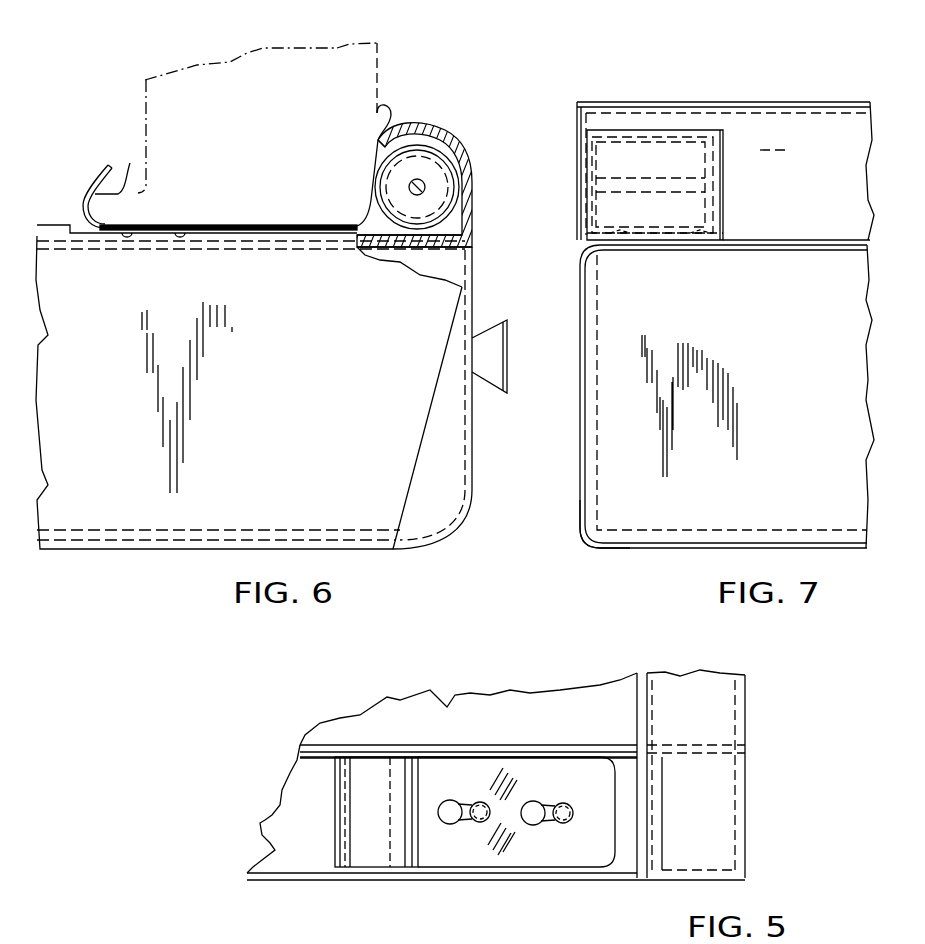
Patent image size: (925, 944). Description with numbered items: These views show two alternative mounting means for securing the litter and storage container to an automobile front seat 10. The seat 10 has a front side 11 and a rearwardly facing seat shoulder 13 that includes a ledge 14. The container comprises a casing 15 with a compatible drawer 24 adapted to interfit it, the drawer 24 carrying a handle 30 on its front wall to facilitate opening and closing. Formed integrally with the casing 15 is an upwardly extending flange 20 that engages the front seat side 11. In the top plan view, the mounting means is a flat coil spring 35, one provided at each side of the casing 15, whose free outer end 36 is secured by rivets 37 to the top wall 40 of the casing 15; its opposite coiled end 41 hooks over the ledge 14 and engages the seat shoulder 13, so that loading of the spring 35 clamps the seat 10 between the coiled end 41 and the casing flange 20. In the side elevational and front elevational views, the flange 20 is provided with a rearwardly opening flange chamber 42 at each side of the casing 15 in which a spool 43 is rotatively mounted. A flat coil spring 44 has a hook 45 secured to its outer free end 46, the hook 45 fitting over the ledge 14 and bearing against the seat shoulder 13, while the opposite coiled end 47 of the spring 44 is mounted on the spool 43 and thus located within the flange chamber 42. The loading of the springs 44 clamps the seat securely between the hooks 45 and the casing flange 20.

In FIG. 5, the automobile front seat 10 is at (476, 908).
In FIG. 6, the front side 11 is at (380, 44).
In FIG. 6, the seat shoulder 13 is at (145, 96).
In FIG. 6, the ledge 14 is at (130, 163).
In FIG. 6, the casing 15 is at (420, 462).
In FIG. 7, the casing 15 is at (578, 327).
In FIG. 5, the casing 15 is at (678, 879).
In FIG. 6, the flange 20 is at (388, 108).
In FIG. 7, the flange 20 is at (740, 101).
In FIG. 5, the flange 20 is at (637, 701).
In FIG. 6, the drawer 24 is at (478, 430).
In FIG. 7, the drawer 24 is at (583, 487).
In FIG. 6, the handle 30 is at (475, 337).
In FIG. 5, the flat coil spring 35 is at (442, 868).
In FIG. 5, the free outer end 36 is at (543, 773).
In FIG. 5, the rivets 37 is at (560, 822).
In FIG. 5, the top wall 40 is at (277, 853).
In FIG. 5, the coiled end 41 is at (335, 775).
In FIG. 6, the flange chamber 42 is at (382, 142).
In FIG. 7, the flange chamber 42 is at (655, 135).
In FIG. 6, the spool 43 is at (448, 148).
In FIG. 7, the spool 43 is at (592, 148).
In FIG. 6, the flat coil spring 44 is at (385, 236).
In FIG. 6, the hook 45 is at (97, 173).
In FIG. 6, the outer free end 46 is at (150, 227).
In FIG. 7, the outer free end 46 is at (695, 232).
In FIG. 6, the coiled end 47 is at (460, 183).
In FIG. 7, the coiled end 47 is at (596, 207).